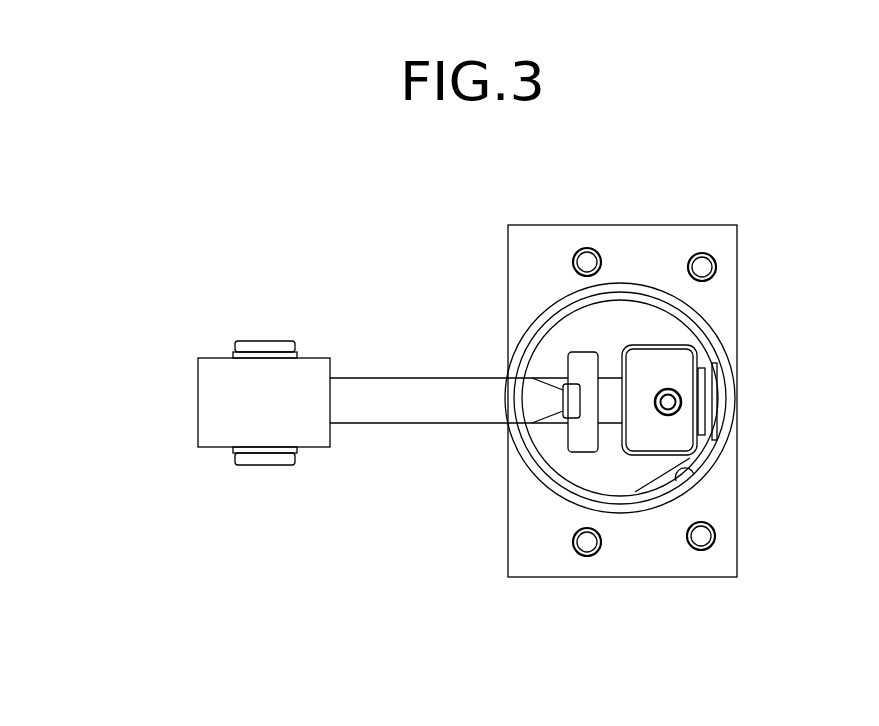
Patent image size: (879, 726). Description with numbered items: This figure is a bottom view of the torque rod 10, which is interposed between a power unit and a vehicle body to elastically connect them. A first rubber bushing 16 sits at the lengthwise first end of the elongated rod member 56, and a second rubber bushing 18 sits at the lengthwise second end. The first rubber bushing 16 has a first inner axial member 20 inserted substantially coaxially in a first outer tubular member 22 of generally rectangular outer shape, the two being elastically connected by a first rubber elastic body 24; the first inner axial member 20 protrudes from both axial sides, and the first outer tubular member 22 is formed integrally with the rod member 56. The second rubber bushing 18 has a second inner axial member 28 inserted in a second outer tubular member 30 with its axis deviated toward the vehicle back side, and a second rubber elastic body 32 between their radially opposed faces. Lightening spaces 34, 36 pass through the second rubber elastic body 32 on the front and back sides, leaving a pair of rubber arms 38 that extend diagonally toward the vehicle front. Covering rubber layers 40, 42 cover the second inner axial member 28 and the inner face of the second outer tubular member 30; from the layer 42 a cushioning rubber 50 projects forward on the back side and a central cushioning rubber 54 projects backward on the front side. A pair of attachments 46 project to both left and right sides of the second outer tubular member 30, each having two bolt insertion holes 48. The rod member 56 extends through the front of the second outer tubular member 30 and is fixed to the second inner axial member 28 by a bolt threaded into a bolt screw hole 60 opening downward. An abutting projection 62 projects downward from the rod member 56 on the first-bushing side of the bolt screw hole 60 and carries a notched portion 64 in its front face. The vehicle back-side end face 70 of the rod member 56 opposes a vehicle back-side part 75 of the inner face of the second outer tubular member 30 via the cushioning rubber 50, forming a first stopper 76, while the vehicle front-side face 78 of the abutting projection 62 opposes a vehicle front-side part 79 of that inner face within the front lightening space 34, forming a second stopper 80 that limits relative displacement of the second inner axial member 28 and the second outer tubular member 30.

The torque rod 10 is at (780, 186).
The first rubber bushing 16 is at (162, 335).
The second rubber bushing 18 is at (764, 236).
The first inner axial member 20 is at (268, 343).
The first outer tubular member 22 is at (316, 370).
The first rubber elastic body 24 is at (243, 456).
The second inner axial member 28 is at (678, 428).
The second outer tubular member 30 is at (500, 243).
The second rubber elastic body 32 is at (655, 300).
The lightening space 34 is at (590, 337).
The lightening space 36 is at (690, 468).
The rubber arm 38 is at (615, 313).
The covering rubber layer 40 is at (707, 362).
The covering rubber layer 42 is at (577, 498).
The attachment 46 is at (537, 243).
The bolt insertion hole 48 is at (590, 255).
The cushioning rubber 50 is at (720, 420).
The central cushioning rubber 54 is at (548, 399).
The rod member 56 is at (357, 440).
The bolt screw hole 60 is at (672, 401).
The abutting projection 62 is at (622, 443).
The notched portion 64 is at (568, 385).
The vehicle back-side end face 70 is at (712, 370).
The vehicle back-side part 75 is at (730, 410).
The first stopper 76 is at (717, 350).
The vehicle front-side face 78 is at (584, 440).
The vehicle front-side part 79 is at (563, 392).
The second stopper 80 is at (545, 336).